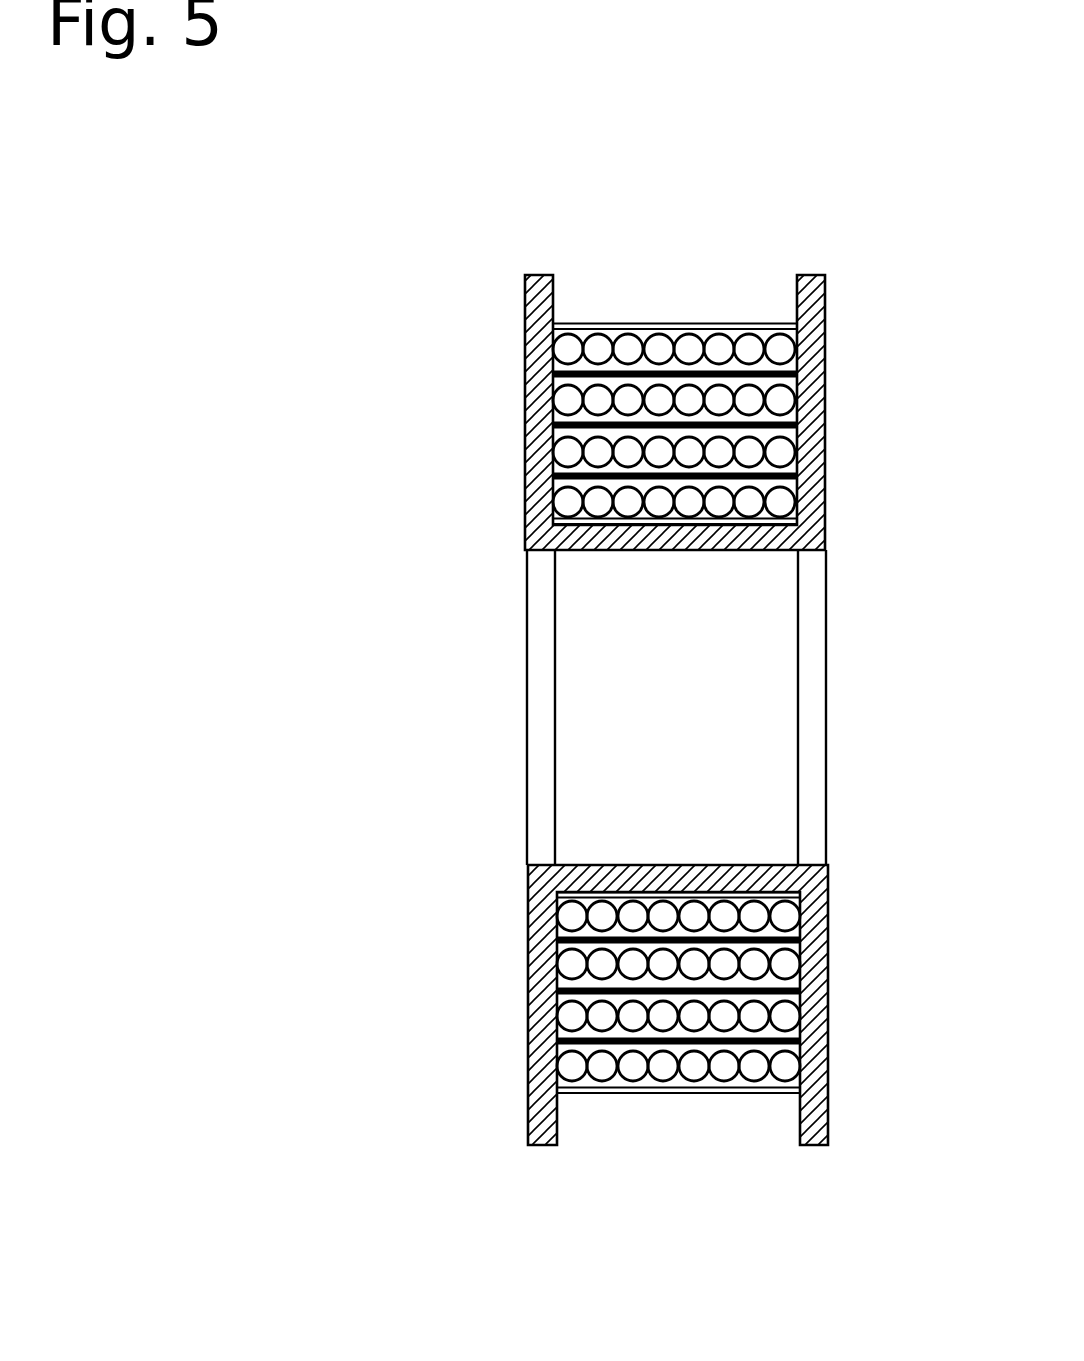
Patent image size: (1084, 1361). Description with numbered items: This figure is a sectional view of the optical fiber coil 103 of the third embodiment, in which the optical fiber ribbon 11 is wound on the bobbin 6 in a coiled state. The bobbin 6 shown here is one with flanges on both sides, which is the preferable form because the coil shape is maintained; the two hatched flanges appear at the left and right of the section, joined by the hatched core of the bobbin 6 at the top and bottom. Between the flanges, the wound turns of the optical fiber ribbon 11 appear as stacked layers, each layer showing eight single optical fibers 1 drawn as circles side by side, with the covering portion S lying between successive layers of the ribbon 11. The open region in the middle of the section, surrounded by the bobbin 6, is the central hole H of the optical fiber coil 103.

The optical fiber coil 103 is at (840, 1187).
The bobbin 6 is at (825, 533).
The optical fiber ribbon 11 is at (598, 323).
The single optical fiber 1 is at (690, 347).
The covering portion S is at (800, 361).
The central hole H is at (585, 791).